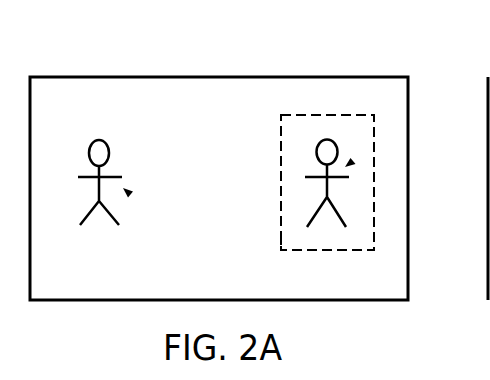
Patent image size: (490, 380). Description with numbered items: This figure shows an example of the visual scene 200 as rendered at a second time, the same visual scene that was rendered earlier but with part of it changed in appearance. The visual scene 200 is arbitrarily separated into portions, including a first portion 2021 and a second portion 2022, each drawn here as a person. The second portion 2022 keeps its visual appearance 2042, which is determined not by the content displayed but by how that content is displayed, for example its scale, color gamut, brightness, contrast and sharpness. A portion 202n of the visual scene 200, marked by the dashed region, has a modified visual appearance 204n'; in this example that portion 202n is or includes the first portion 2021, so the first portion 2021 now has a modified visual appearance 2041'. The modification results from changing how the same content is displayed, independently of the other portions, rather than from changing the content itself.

The visual scene 200 is at (88, 77).
The second portion 2022 is at (141, 119).
The first portion 2021 is at (318, 143).
The portion 202n is at (281, 183).
The visual appearance 2042 is at (126, 191).
The modified visual appearance 2041' is at (412, 138).
The modified visual appearance 204n' is at (224, 260).